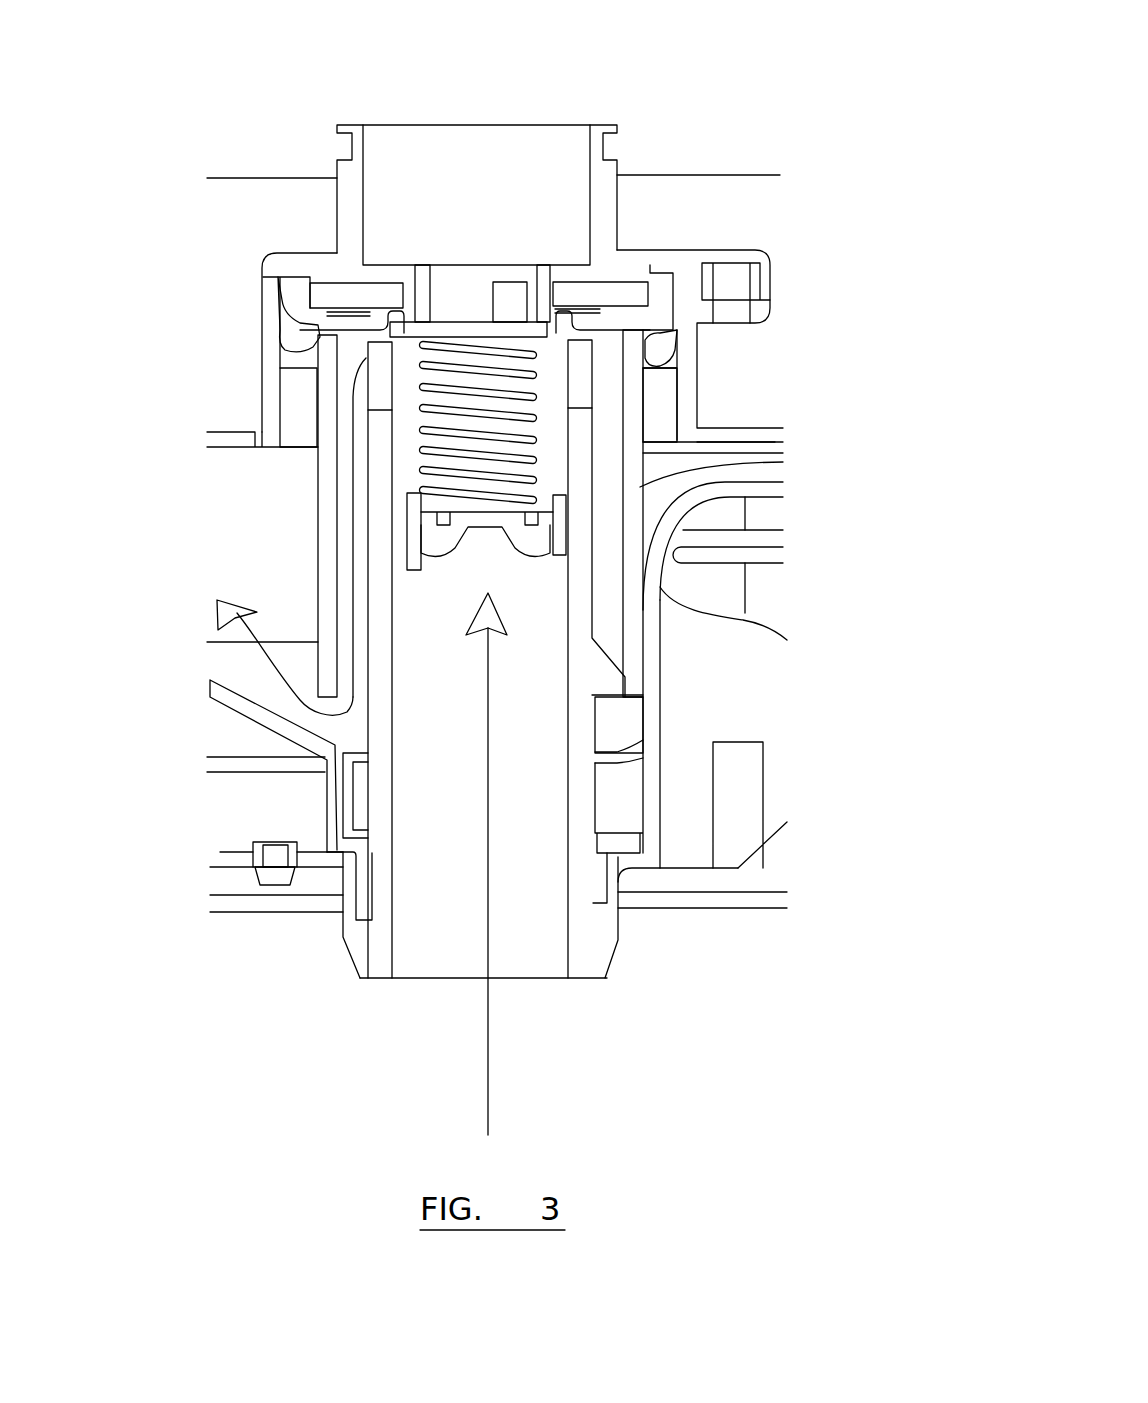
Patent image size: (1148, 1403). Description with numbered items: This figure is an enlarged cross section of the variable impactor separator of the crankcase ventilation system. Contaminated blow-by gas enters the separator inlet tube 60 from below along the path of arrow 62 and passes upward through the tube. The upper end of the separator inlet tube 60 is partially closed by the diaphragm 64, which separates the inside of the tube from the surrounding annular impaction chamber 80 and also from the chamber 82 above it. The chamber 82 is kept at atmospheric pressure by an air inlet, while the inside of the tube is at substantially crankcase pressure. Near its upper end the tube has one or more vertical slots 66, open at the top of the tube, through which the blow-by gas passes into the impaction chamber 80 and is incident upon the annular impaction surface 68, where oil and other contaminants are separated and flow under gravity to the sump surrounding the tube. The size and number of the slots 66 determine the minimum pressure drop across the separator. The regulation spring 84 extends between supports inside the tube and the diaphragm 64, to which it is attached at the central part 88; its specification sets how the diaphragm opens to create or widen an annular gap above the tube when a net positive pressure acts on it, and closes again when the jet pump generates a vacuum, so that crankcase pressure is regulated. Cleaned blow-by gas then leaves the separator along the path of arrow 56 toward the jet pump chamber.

The arrow 56 is at (258, 663).
The separator inlet tube 60 is at (377, 945).
The arrow 62 is at (490, 1043).
The diaphragm 64 is at (547, 287).
The slots 66 is at (400, 373).
The annular impaction surface 68 is at (340, 407).
The annular impaction chamber 80 is at (345, 456).
The chamber 82 is at (417, 163).
The regulation spring 84 is at (420, 467).
The central part 88 is at (460, 320).